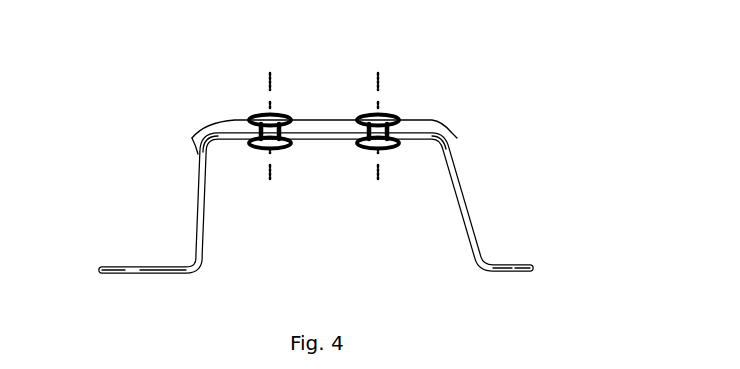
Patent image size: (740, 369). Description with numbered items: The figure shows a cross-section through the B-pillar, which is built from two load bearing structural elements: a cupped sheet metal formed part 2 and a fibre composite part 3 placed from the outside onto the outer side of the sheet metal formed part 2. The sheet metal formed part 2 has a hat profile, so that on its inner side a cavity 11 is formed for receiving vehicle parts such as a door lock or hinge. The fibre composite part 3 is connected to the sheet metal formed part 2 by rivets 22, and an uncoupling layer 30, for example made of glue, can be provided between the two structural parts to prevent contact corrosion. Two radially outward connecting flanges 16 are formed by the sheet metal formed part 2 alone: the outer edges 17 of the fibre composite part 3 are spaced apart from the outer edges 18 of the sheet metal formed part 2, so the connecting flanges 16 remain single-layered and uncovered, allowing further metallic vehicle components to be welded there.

The sheet metal formed part 2 is at (461, 210).
The fibre composite part 3 is at (322, 117).
The cavity 11 is at (342, 242).
The connecting flange 16 is at (138, 269).
The outer edge of the fibre composite part 17 is at (192, 138).
The outer edge of the sheet metal formed part 18 is at (102, 270).
The rivet 22 is at (266, 109).
The uncoupling layer 30 is at (196, 155).